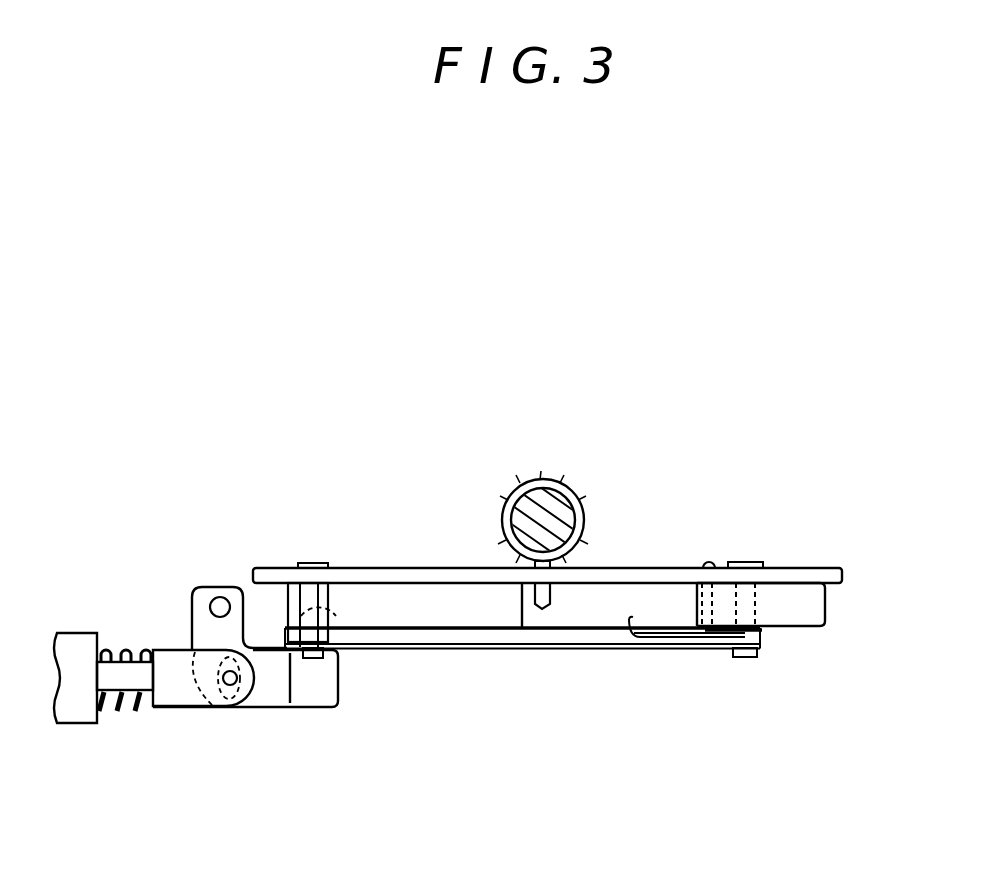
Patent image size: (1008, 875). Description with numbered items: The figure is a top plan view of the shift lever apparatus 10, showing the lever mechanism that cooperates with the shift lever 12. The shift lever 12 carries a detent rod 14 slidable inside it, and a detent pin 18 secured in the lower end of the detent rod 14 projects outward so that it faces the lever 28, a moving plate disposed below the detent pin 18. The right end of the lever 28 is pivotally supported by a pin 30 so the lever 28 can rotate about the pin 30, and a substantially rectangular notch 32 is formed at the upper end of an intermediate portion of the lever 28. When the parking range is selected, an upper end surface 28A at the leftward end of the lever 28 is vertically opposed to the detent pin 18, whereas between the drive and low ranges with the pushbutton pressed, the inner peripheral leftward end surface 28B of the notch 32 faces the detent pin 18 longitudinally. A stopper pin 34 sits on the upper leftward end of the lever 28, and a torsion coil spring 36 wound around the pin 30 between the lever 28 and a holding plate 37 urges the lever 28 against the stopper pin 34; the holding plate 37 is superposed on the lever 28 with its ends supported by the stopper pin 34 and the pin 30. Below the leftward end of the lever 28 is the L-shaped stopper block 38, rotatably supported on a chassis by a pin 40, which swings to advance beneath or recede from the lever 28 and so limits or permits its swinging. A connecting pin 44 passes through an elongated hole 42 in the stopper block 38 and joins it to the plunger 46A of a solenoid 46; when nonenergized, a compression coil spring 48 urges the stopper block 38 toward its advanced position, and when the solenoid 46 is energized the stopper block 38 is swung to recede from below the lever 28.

The shift lever apparatus 10 is at (390, 764).
The shift lever 12 is at (565, 484).
The detent rod 14 is at (562, 525).
The detent pin 18 is at (545, 609).
The lever 28 is at (815, 605).
The upper end surface 28A is at (380, 594).
The inner peripheral leftward end surface 28B is at (528, 627).
The pin 30 is at (744, 562).
The notch 32 is at (697, 596).
The stopper pin 34 is at (313, 563).
The torsion coil spring 36 is at (760, 635).
The holding plate 37 is at (453, 650).
The stopper block 38 is at (333, 683).
The pin 40 is at (222, 597).
The elongated hole 42 is at (228, 708).
The connecting pin 44 is at (236, 684).
The solenoid 46 is at (77, 715).
The plunger 46A is at (178, 702).
The compression coil spring 48 is at (117, 712).